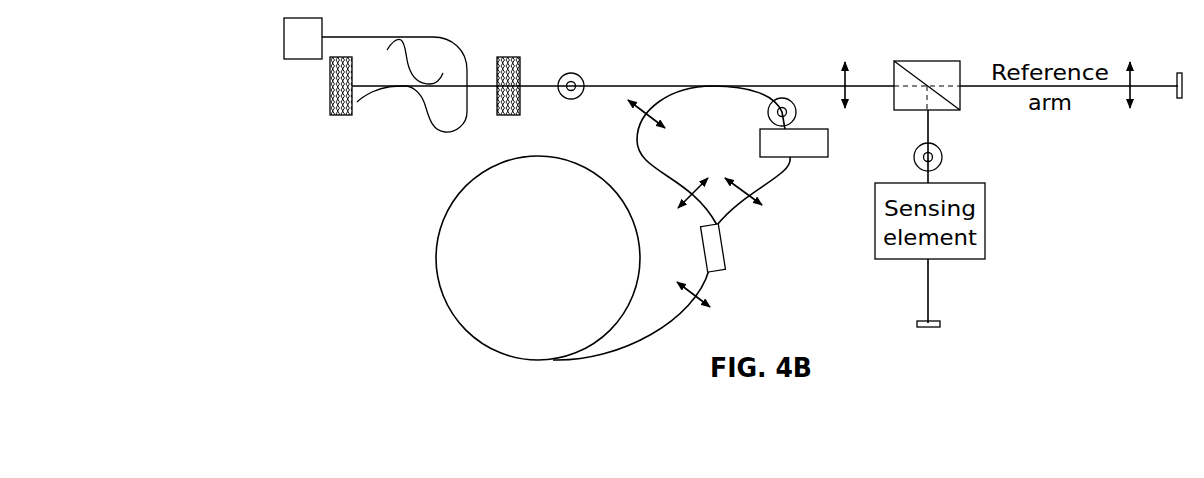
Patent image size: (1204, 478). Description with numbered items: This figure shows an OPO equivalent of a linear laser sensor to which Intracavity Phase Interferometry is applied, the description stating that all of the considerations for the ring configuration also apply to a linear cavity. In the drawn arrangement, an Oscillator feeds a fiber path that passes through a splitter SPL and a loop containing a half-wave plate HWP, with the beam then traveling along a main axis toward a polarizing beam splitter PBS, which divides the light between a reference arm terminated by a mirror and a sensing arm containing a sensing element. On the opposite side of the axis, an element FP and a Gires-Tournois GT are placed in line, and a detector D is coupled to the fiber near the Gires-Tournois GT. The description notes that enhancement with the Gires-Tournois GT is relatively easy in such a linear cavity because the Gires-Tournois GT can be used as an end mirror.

The detector D is at (375, 75).
The Gires-Tournois GT is at (320, 86).
The Faraday rotator / fiber polarizer FP is at (512, 71).
The half-wave plate HWP is at (770, 155).
The splitter SPL is at (742, 251).
The polarizing beam splitter PBS is at (927, 71).
The oscillator Oscillator is at (576, 258).